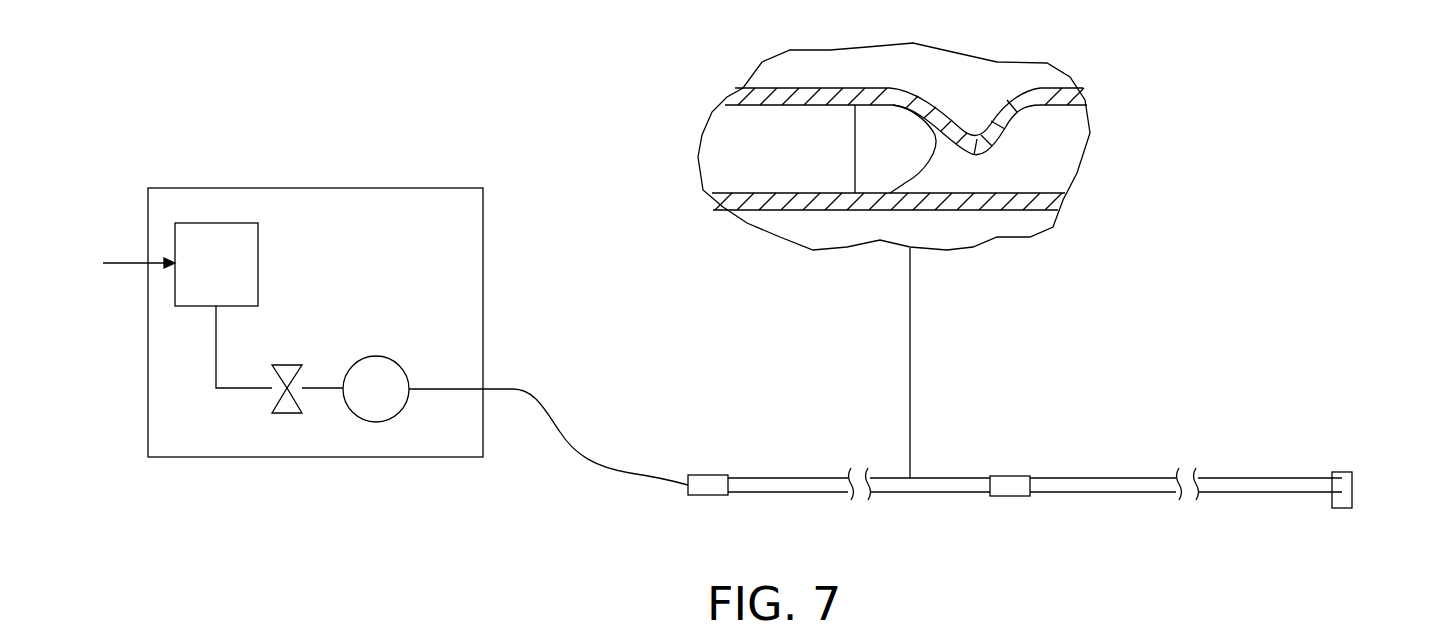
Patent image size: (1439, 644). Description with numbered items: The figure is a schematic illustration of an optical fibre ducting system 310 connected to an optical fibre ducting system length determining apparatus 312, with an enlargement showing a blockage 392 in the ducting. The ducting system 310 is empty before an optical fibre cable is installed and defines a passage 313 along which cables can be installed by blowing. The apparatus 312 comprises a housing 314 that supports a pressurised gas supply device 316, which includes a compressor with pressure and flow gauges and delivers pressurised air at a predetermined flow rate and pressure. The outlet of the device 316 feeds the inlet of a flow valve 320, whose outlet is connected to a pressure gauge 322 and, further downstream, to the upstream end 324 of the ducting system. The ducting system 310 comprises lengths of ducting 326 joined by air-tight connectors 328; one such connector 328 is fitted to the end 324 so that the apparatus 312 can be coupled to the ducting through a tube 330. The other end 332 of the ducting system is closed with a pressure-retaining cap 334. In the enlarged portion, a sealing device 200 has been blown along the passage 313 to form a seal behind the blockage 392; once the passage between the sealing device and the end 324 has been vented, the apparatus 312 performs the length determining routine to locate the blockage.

The sealing device 200 is at (925, 158).
The optical fibre ducting system 310 is at (1049, 304).
The optical fibre ducting system length determining apparatus 312 is at (332, 280).
The passage 313 is at (817, 180).
The housing 314 is at (484, 203).
The pressurised gas supply device 316 is at (260, 238).
The flow valve 320 is at (290, 362).
The pressure gauge 322 is at (377, 355).
The upstream end 324 is at (703, 512).
The length of ducting 326 is at (817, 493).
The air-tight connector 328 is at (850, 491).
The tube 330 is at (562, 432).
The other end 332 is at (1360, 529).
The pressure-retaining cap 334 is at (1355, 487).
The blockage 392 is at (993, 120).